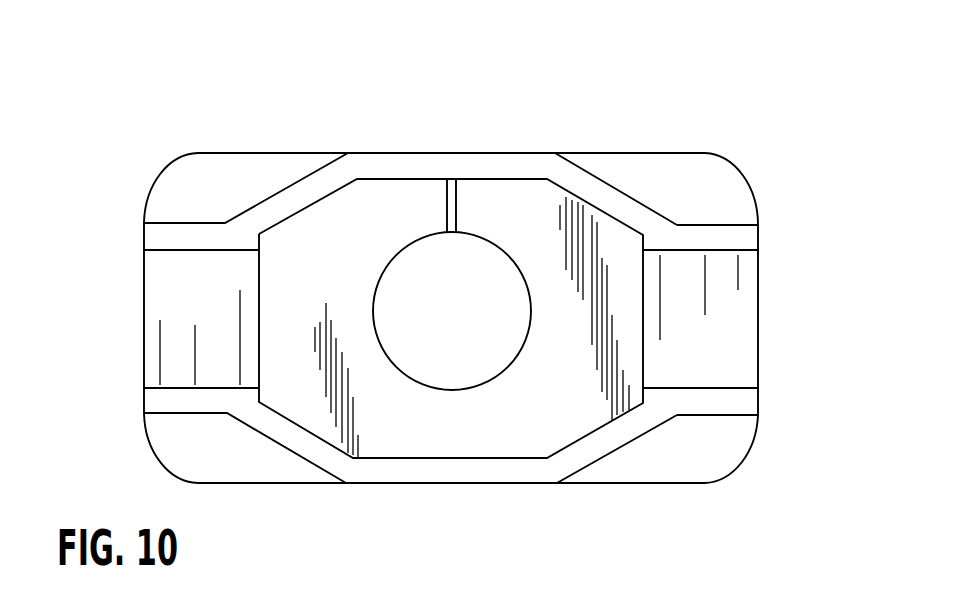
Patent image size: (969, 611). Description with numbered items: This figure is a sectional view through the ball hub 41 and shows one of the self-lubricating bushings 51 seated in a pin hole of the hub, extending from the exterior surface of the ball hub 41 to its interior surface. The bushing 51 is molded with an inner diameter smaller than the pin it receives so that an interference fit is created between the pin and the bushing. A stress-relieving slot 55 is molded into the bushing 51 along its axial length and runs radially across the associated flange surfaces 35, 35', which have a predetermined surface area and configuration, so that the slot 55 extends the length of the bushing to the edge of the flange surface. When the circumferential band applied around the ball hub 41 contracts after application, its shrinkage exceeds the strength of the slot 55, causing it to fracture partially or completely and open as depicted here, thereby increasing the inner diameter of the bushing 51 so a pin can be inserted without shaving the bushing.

The ball hub 41 is at (253, 110).
The stress-relieving slot 55 is at (452, 178).
The flange surface 35 is at (605, 242).
The flange surface 35' is at (499, 261).
The self-lubricating bushing 51 is at (421, 441).